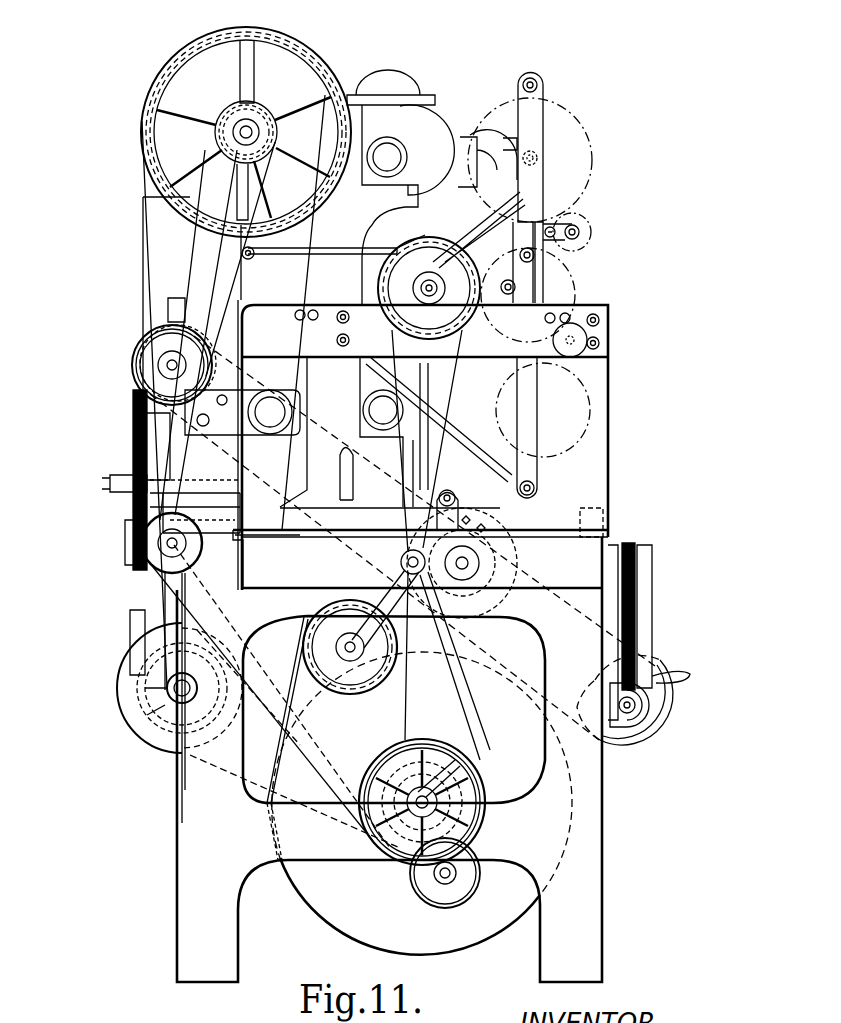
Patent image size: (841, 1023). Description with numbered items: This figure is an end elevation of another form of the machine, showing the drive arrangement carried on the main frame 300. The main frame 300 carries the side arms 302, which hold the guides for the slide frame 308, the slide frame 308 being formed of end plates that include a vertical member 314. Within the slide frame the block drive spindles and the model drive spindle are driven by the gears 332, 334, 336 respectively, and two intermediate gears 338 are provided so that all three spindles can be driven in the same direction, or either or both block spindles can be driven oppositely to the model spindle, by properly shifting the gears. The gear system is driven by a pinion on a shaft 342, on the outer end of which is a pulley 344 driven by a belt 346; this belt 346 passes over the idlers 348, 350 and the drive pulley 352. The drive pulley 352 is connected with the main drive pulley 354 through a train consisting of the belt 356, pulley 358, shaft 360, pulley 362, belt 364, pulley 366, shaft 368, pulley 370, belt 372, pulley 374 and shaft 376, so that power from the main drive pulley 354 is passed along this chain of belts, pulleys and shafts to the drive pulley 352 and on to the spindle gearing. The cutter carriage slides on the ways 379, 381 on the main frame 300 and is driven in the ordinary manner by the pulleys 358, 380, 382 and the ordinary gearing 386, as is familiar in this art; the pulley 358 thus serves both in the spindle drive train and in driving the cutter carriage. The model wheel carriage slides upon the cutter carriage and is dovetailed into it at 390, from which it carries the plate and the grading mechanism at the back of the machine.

The main frame 300 is at (283, 559).
The side arms 302 is at (327, 347).
The slide frame 308 is at (533, 372).
The vertical member 314 is at (533, 195).
The gear 332 is at (578, 135).
The gear 334 is at (583, 422).
The gear 336 is at (568, 290).
The intermediate gears 338 is at (586, 232).
The shaft 342 is at (429, 288).
The pulley 344 is at (379, 187).
The belt 346 is at (455, 686).
The idler 348 is at (462, 886).
The idler 350 is at (356, 663).
The drive pulley 352 is at (150, 556).
The main drive pulley 354 is at (478, 812).
The belt 356 is at (200, 225).
The pulley 358 is at (256, 128).
The shaft 360 is at (254, 118).
The pulley 362 is at (290, 50).
The belt 364 is at (143, 197).
The pulley 366 is at (147, 715).
The shaft 368 is at (172, 700).
The pulley 370 is at (120, 703).
The belt 372 is at (230, 770).
The pulley 374 is at (425, 778).
The shaft 376 is at (450, 780).
The way 379 is at (605, 540).
The pulley 380 is at (155, 360).
The way 381 is at (133, 538).
The pulley 382 is at (150, 350).
The gearing 386 is at (640, 600).
The dovetail 390 is at (128, 496).